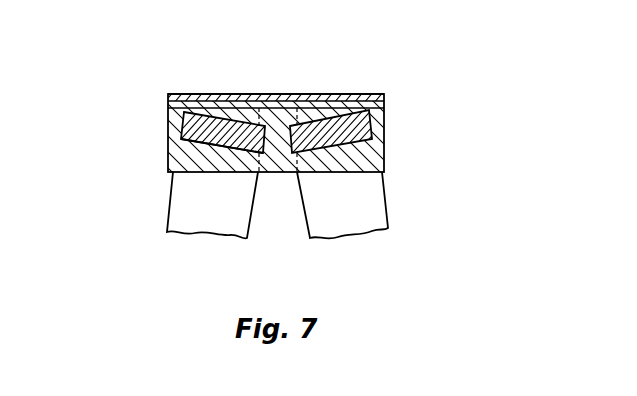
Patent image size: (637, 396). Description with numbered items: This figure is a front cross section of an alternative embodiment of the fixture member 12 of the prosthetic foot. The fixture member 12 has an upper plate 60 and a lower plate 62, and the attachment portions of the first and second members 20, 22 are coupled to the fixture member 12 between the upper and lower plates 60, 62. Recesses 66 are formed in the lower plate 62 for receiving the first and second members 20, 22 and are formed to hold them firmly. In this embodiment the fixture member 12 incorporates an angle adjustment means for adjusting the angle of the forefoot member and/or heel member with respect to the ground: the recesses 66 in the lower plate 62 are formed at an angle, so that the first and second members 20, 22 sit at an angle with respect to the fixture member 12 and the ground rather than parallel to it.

The fixture member 12 is at (399, 89).
The first member 20 is at (182, 131).
The second member 22 is at (360, 123).
The upper plate 60 is at (318, 108).
The lower plate 62 is at (377, 157).
The recesses 66 is at (181, 139).